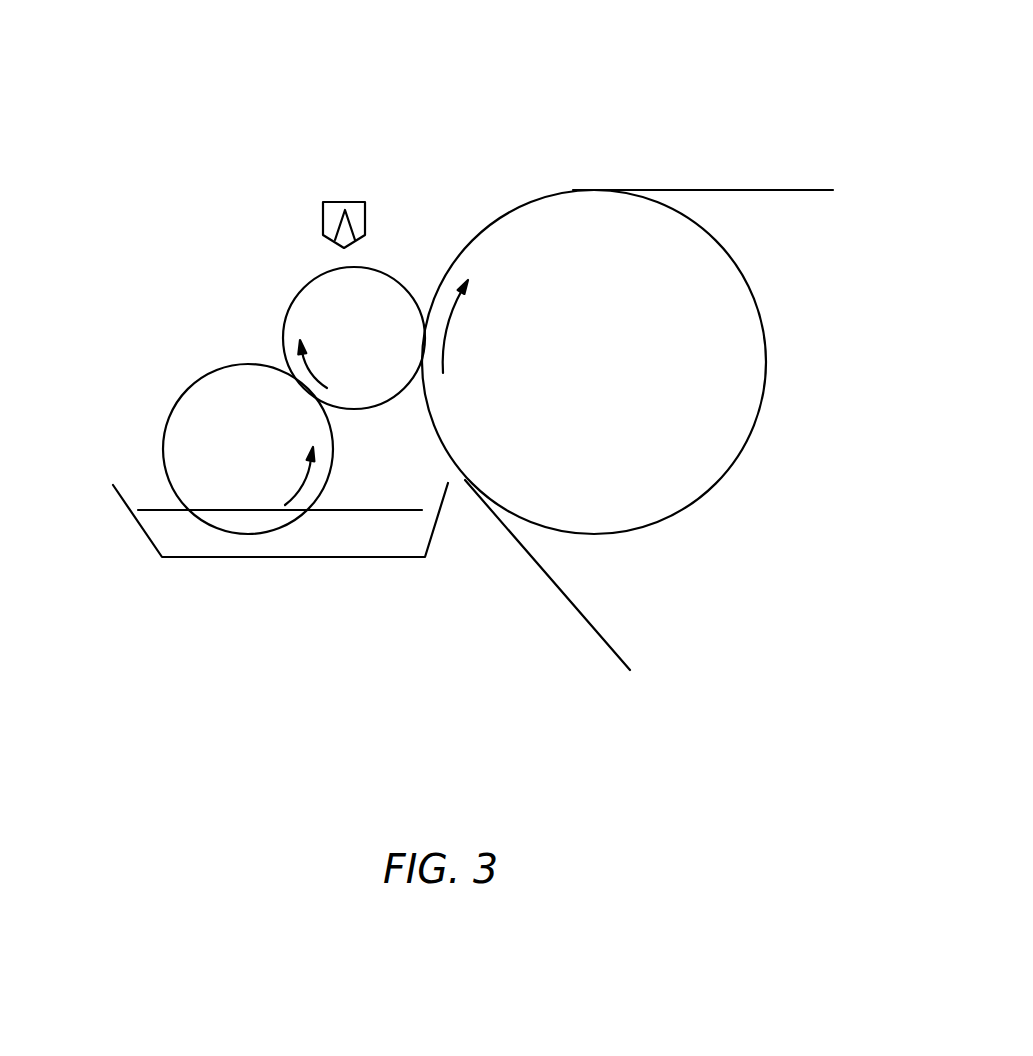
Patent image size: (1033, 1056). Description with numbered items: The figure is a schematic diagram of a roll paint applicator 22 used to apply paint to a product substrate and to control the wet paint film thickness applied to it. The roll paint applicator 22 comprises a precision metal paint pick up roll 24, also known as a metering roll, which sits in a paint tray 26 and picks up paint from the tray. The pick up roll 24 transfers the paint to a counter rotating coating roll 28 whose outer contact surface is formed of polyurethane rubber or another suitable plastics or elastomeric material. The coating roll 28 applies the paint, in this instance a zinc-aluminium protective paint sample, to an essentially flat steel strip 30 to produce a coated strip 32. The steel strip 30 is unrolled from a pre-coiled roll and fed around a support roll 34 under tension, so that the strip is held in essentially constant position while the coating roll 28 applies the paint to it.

The roll paint applicator 22 is at (522, 155).
The precision metal paint pick up roll 24 is at (182, 443).
The paint tray 26 is at (392, 537).
The coating roll 28 is at (365, 295).
The steel strip 30 is at (600, 635).
The coated strip 32 is at (730, 190).
The support roll 34 is at (669, 468).